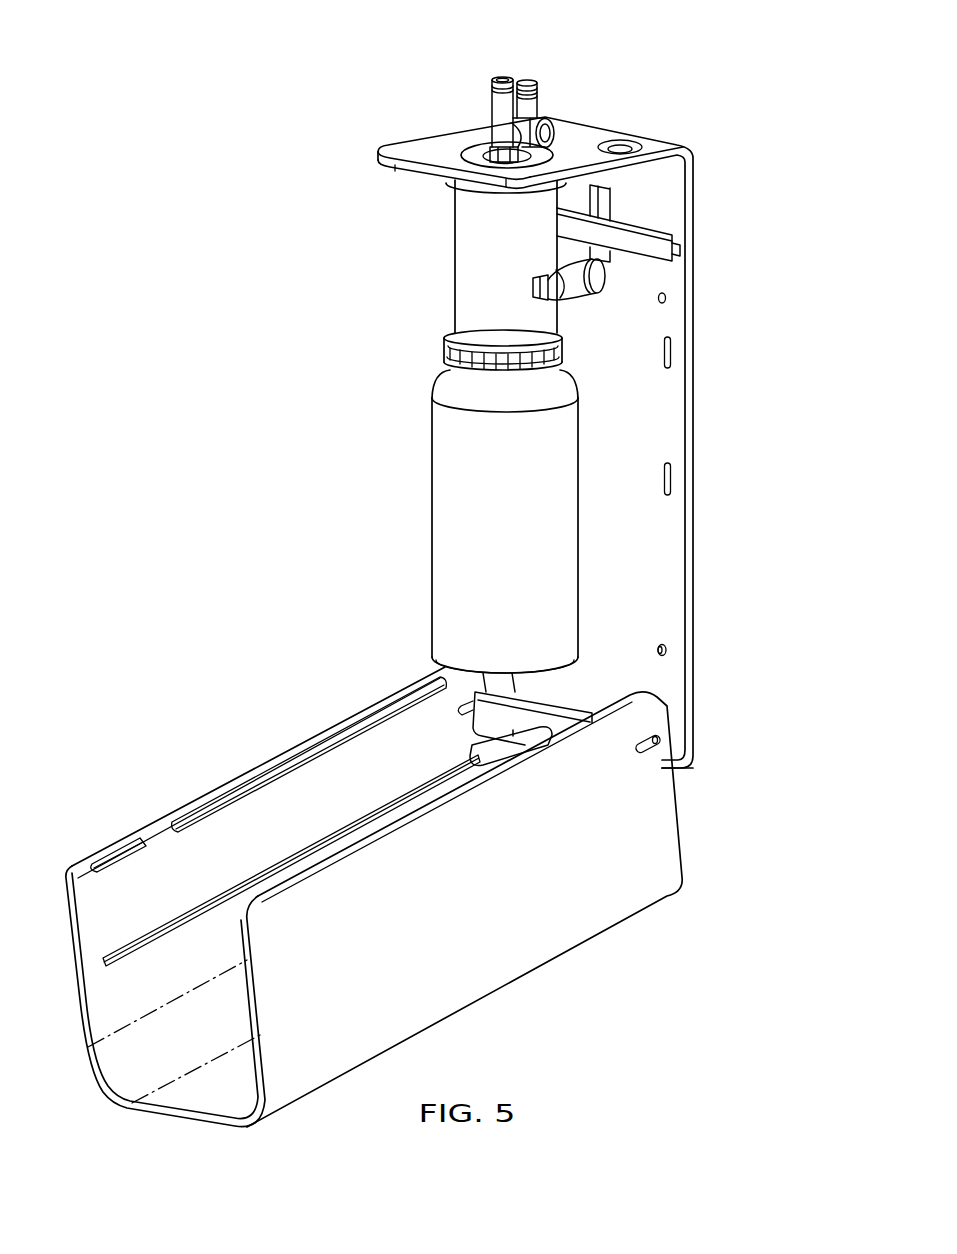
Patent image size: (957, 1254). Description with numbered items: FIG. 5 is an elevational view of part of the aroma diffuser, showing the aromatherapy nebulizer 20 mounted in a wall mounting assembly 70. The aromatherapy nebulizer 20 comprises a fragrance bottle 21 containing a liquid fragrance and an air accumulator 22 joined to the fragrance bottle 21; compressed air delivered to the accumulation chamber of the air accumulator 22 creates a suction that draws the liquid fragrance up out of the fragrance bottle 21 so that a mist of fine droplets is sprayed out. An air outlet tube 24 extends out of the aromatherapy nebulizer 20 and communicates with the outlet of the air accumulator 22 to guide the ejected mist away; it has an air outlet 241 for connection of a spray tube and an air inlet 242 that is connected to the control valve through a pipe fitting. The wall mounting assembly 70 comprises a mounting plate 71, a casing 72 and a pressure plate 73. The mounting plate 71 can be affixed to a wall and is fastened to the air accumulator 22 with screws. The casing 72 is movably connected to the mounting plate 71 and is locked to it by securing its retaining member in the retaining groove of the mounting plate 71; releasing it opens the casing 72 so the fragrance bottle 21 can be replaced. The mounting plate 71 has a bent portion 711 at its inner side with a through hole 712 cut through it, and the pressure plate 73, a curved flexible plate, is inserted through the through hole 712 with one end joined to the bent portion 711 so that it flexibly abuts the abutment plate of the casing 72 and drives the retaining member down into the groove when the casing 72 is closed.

The aromatherapy nebulizer 20 is at (322, 22).
The fragrance bottle 21 is at (455, 452).
The air accumulator 22 is at (472, 256).
The air outlet tube 24 is at (490, 113).
The air outlet 241 is at (504, 77).
The air inlet 242 is at (544, 133).
The wall mounting assembly 70 is at (813, 528).
The mounting plate 71 is at (662, 546).
The bent portion 711 is at (700, 768).
The through hole 712 is at (545, 723).
The casing 72 is at (580, 918).
The pressure plate 73 is at (470, 750).